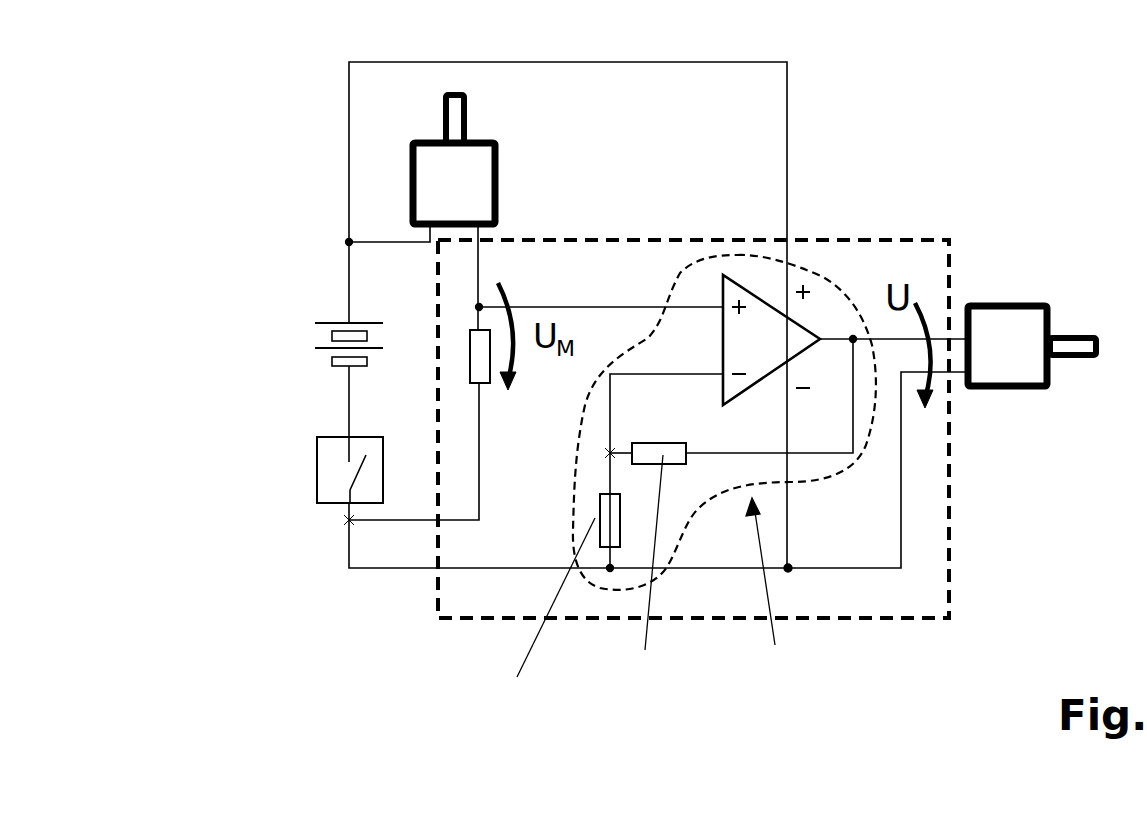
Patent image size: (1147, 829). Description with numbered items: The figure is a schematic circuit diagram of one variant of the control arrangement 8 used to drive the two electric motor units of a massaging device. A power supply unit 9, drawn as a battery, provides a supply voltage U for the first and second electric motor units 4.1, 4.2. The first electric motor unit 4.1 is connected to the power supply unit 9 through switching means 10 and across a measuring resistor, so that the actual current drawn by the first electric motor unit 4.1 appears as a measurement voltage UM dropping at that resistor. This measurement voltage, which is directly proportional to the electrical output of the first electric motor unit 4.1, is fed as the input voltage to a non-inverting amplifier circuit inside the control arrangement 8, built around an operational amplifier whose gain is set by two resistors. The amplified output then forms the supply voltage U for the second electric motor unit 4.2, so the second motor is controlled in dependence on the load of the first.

The first electric motor unit 4.1 is at (438, 173).
The second electric motor unit 4.2 is at (1015, 358).
The control arrangement 8 is at (868, 240).
The power supply unit 9 is at (282, 332).
The switching means 10 is at (292, 495).